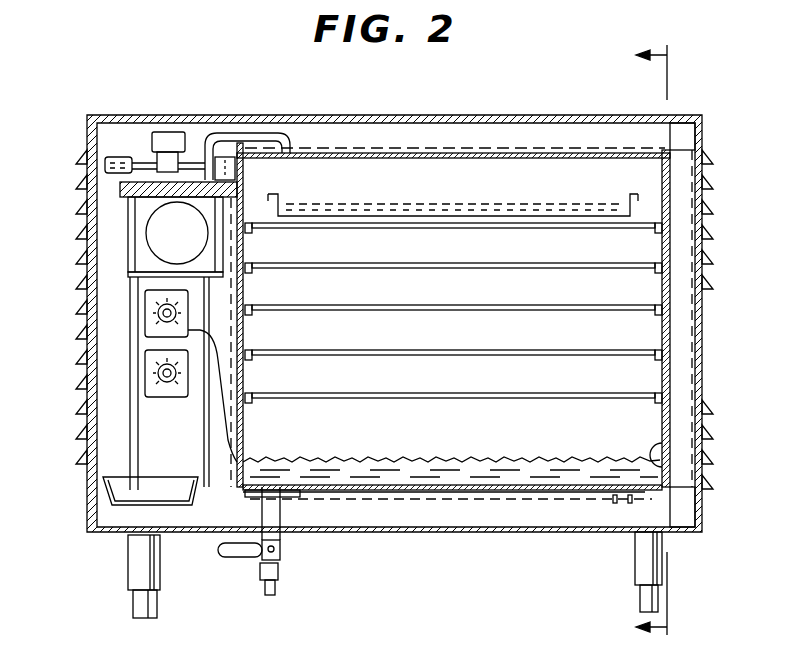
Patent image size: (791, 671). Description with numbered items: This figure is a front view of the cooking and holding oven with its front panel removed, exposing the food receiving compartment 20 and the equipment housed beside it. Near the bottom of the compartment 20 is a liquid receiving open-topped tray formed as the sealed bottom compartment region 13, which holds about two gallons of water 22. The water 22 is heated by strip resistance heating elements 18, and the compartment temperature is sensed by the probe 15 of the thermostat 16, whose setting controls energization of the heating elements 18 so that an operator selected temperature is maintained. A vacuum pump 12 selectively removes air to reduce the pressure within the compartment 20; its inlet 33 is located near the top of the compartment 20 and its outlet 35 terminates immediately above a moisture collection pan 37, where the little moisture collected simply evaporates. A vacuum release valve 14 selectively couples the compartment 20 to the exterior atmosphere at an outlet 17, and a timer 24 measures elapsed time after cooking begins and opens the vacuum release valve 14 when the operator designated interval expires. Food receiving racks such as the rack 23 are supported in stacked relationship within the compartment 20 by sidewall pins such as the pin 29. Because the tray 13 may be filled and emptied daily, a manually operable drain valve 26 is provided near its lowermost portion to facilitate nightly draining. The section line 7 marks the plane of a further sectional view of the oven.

The section line 7- 7 is at (640, 341).
The vacuum pump 12 is at (135, 240).
The sealed bottom compartment region 13 is at (660, 450).
The vacuum release valve 14 is at (170, 132).
The probe 15 is at (234, 460).
The thermostat 16 is at (130, 330).
The outlet 17 is at (117, 157).
The strip resistance heating elements 18 is at (388, 495).
The food receiving compartment 20 is at (438, 427).
The water 22 is at (500, 470).
The food receiving rack 23 is at (284, 222).
The timer 24 is at (150, 389).
The drain valve 26 is at (283, 553).
The sidewall pin 29 is at (246, 316).
The inlet 33 is at (286, 160).
The outlet 35 is at (135, 490).
The moisture collection pan 37 is at (107, 497).